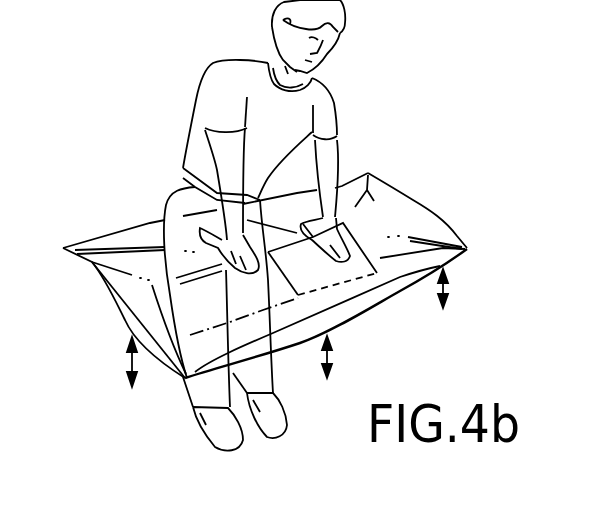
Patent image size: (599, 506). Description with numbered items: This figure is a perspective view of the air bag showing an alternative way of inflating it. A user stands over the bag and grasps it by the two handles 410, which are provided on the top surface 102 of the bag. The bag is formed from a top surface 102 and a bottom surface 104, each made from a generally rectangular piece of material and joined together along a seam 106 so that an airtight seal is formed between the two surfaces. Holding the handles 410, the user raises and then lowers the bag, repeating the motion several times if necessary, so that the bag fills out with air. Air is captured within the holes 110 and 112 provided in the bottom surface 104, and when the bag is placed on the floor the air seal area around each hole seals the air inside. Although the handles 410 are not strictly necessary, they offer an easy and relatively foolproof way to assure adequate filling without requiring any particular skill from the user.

The handles 410 is at (173, 191).
The top surface 102 is at (410, 201).
The bottom surface 104 is at (392, 298).
The seam 106 is at (123, 303).
The hole 110 is at (298, 298).
The hole 112 is at (375, 275).